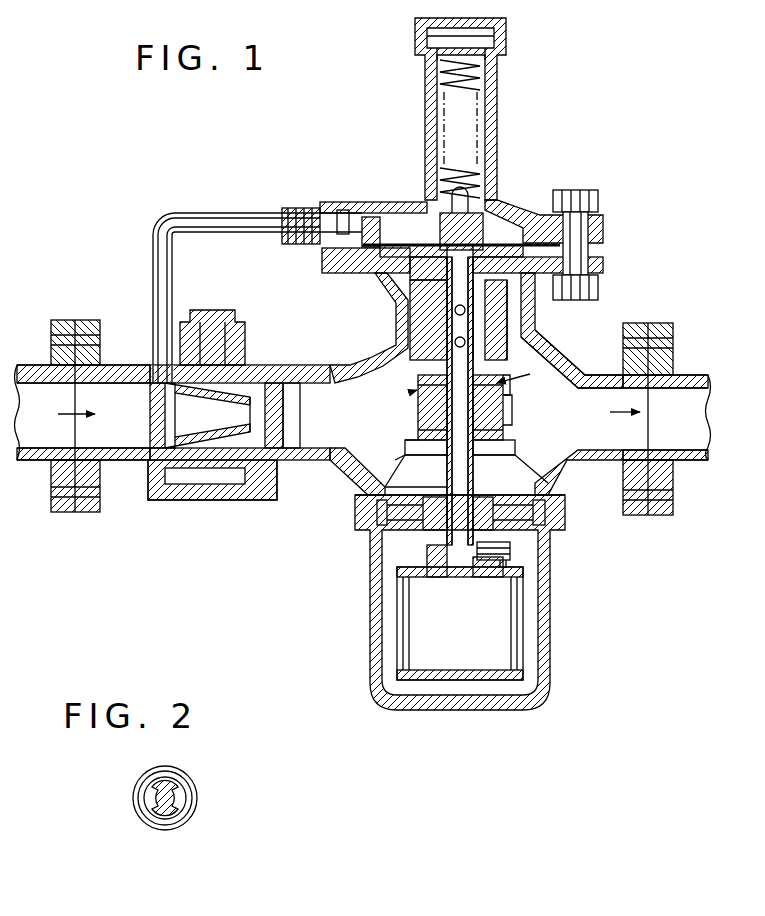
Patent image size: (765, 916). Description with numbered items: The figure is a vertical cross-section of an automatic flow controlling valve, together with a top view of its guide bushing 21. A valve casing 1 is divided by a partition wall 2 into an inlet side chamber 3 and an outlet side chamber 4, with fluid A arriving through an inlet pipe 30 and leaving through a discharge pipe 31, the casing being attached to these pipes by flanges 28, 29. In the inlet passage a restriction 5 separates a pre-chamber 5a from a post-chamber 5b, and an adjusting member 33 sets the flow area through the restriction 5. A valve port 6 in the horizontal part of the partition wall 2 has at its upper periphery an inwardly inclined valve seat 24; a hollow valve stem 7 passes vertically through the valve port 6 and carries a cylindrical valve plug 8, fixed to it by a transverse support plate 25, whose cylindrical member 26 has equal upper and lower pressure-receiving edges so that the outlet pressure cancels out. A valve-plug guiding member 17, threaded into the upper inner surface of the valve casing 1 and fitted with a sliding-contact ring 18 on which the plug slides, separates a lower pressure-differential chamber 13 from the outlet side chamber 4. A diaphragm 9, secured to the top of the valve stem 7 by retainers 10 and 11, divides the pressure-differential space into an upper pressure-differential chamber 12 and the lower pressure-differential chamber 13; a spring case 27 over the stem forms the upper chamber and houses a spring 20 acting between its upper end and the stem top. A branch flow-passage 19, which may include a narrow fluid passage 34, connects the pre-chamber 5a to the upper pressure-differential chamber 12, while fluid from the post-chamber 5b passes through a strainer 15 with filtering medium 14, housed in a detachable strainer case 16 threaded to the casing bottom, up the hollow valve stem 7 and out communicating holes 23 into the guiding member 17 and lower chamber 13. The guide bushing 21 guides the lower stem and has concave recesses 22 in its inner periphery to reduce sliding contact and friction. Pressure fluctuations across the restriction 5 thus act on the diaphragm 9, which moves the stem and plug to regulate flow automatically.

In FIG. 1, the valve casing 1 is at (362, 350).
In FIG. 1, the partition wall 2 is at (372, 418).
In FIG. 1, the inlet side chamber 3 is at (295, 385).
In FIG. 1, the outlet side chamber 4 is at (560, 367).
In FIG. 1, the restriction 5 is at (240, 415).
In FIG. 1, the pre-chamber 5a is at (178, 432).
In FIG. 1, the post-chamber 5b is at (295, 455).
In FIG. 1, the valve port 6 is at (425, 457).
In FIG. 1, the hollow valve stem 7 is at (487, 455).
In FIG. 2, the hollow valve stem 7 is at (150, 800).
In FIG. 1, the cylindrical valve plug 8 is at (507, 405).
In FIG. 1, the diaphragm 9 is at (505, 243).
In FIG. 1, the retainer 10 is at (495, 240).
In FIG. 1, the retainer 11 is at (532, 243).
In FIG. 1, the upper pressure-differential chamber 12 is at (397, 202).
In FIG. 1, the lower pressure-differential chamber 13 is at (398, 270).
In FIG. 1, the filtering medium 14 is at (398, 605).
In FIG. 1, the strainer 15 is at (525, 575).
In FIG. 1, the strainer case 16 is at (548, 650).
In FIG. 1, the valve-plug guiding member 17 is at (512, 310).
In FIG. 1, the sliding-contact ring 18 is at (530, 335).
In FIG. 1, the branch flow-passage 19 is at (240, 212).
In FIG. 1, the spring 20 is at (472, 82).
In FIG. 1, the guide bushing 21 is at (420, 520).
In FIG. 2, the guide bushing 21 is at (197, 805).
In FIG. 1, the concave recesses 22 is at (492, 546).
In FIG. 2, the concave recesses 22 is at (170, 815).
In FIG. 1, the communicating holes 23 is at (440, 330).
In FIG. 1, the valve seat 24 is at (417, 447).
In FIG. 1, the transverse support plate 25 is at (507, 418).
In FIG. 1, the cylindrical member 26 is at (417, 372).
In FIG. 1, the spring case 27 is at (425, 87).
In FIG. 1, the flange 28 is at (102, 362).
In FIG. 1, the flange 29 is at (628, 362).
In FIG. 1, the inlet pipe 30 is at (40, 365).
In FIG. 1, the discharge pipe 31 is at (693, 373).
In FIG. 1, the adjusting member 33 is at (212, 310).
In FIG. 1, the narrow fluid passage 34 is at (340, 208).